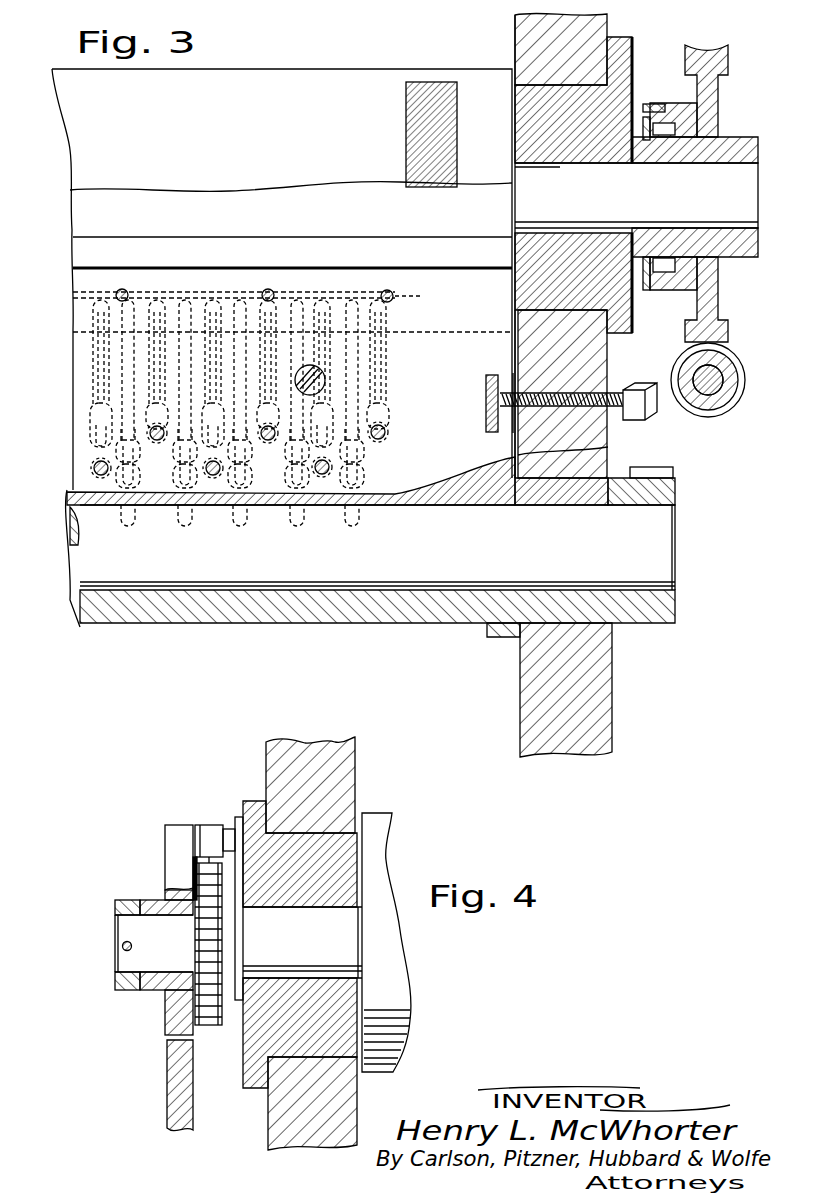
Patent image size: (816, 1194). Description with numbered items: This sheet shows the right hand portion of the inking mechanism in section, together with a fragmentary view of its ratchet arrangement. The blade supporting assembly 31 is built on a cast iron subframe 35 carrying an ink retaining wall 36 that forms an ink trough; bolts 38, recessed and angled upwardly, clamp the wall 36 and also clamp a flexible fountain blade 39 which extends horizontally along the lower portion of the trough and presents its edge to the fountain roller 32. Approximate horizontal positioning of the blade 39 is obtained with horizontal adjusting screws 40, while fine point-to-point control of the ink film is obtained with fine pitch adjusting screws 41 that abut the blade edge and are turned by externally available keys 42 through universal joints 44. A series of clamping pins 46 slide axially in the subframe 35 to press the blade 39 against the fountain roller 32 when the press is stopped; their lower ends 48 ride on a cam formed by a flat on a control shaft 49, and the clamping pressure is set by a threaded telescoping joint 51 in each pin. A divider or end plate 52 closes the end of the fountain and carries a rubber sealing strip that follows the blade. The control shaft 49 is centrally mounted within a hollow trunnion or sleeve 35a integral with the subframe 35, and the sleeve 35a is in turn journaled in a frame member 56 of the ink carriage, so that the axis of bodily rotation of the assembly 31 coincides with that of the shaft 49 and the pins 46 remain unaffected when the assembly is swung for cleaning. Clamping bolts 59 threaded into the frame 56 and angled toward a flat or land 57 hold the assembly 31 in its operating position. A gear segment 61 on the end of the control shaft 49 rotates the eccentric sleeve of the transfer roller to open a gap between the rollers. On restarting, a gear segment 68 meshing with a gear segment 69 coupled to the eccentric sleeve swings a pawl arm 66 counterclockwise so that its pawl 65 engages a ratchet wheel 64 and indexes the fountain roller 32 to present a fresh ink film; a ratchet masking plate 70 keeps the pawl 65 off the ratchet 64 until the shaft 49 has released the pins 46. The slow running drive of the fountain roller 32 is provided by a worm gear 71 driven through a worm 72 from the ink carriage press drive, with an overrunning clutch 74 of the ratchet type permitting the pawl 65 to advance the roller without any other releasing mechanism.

In FIG. 3, the blade supporting assembly 31 is at (66, 372).
In FIG. 3, the fountain roller 32 is at (348, 76).
In FIG. 4, the fountain roller 32 is at (384, 844).
In FIG. 3, the subframe 35 is at (298, 623).
In FIG. 3, the supporting sleeve or hollow trunnion 35a is at (612, 622).
In FIG. 3, the ink retaining wall 36 is at (331, 204).
In FIG. 3, the bolts 38 is at (324, 380).
In FIG. 3, the fountain blade 39 is at (420, 296).
In FIG. 3, the horizontal adjusting screws 40 is at (389, 294).
In FIG. 3, the adjusting screws 41 is at (400, 318).
In FIG. 3, the keys 42 is at (401, 440).
In FIG. 3, the universal joints 44 is at (90, 424).
In FIG. 3, the clamping pins 46 is at (241, 357).
In FIG. 3, the lower ends 48 is at (360, 530).
In FIG. 3, the control shaft 49 is at (664, 540).
In FIG. 4, the control shaft 49 is at (238, 944).
In FIG. 3, the threaded telescoping joint 51 is at (106, 484).
In FIG. 3, the divider or end plate 52 is at (414, 130).
In FIG. 3, the frame member 56 is at (605, 690).
In FIG. 4, the frame member 56 is at (275, 768).
In FIG. 3, the flat or land 57 is at (490, 385).
In FIG. 3, the clamping bolts 59 is at (637, 386).
In FIG. 3, the gear segment 61 is at (673, 473).
In FIG. 4, the ratchet wheel 64 is at (214, 1018).
In FIG. 4, the pawl 65 is at (206, 830).
In FIG. 4, the pawl arm 66 is at (172, 840).
In FIG. 4, the gear segment 68 is at (170, 1020).
In FIG. 4, the gear segment 69 is at (170, 1083).
In FIG. 4, the ratchet masking plate 70 is at (192, 860).
In FIG. 3, the worm gear 71 is at (728, 333).
In FIG. 3, the worm 72 is at (735, 382).
In FIG. 3, the overrunning clutch 74 is at (664, 291).